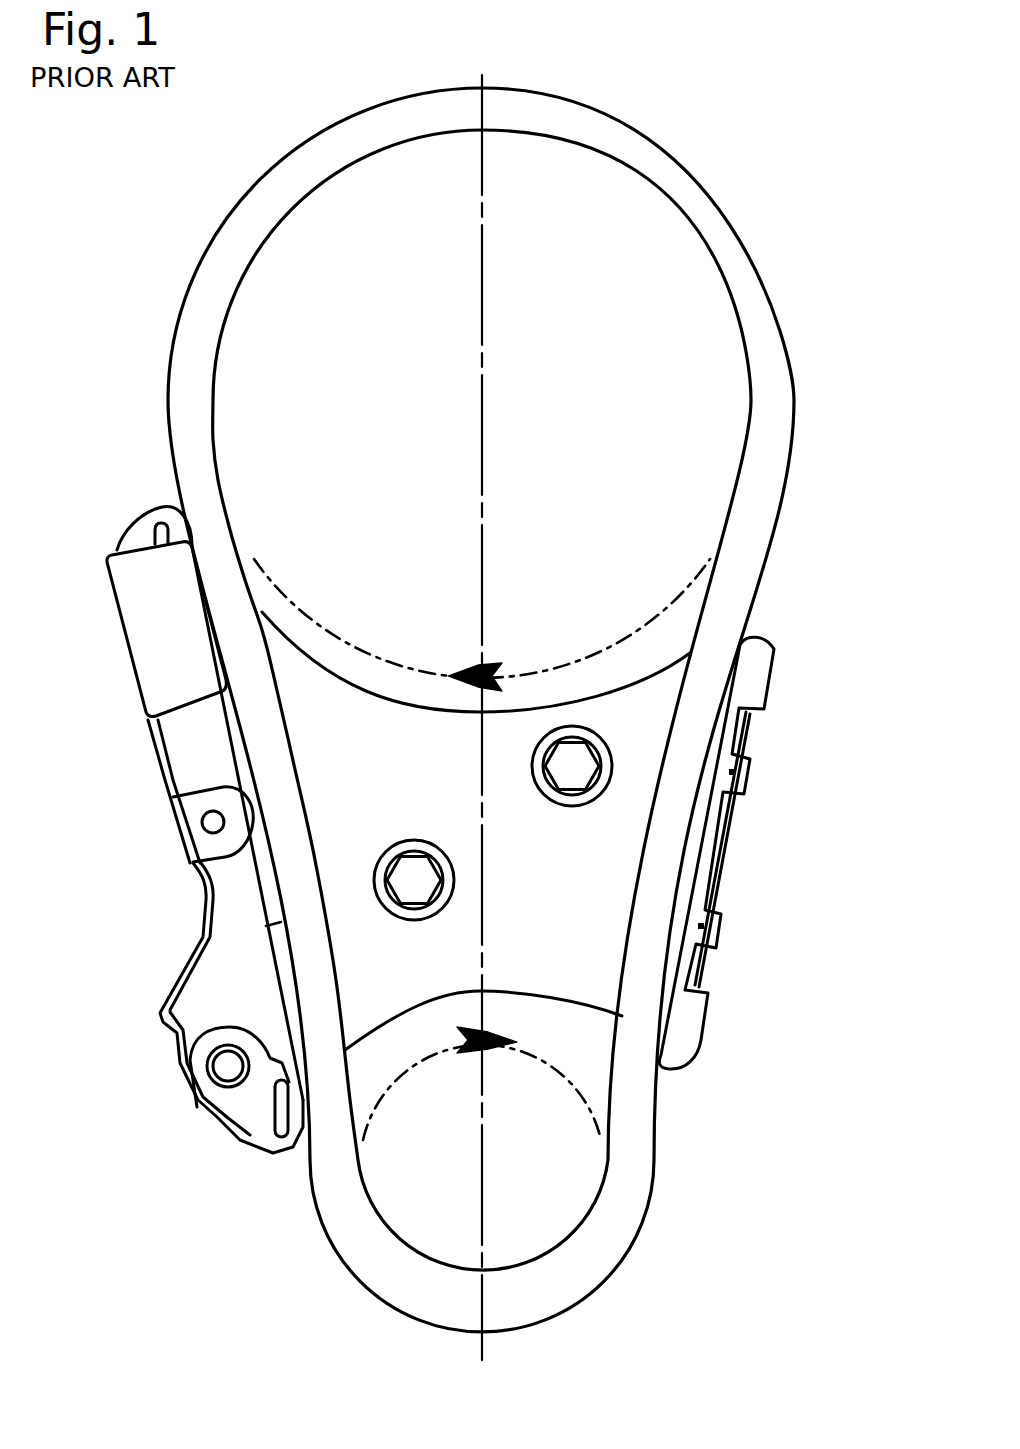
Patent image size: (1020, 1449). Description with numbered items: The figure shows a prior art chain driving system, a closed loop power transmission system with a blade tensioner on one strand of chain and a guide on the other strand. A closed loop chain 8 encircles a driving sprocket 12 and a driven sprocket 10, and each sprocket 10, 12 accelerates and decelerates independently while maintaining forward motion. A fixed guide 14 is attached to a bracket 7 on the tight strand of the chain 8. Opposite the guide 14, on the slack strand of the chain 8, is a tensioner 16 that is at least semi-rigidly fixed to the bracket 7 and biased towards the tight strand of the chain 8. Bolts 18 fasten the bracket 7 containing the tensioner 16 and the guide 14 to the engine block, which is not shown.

The bracket 7 is at (590, 878).
The closed loop chain 8 is at (567, 128).
The driven sprocket 10 is at (625, 263).
The driving sprocket 12 is at (565, 1222).
The fixed guide 14 is at (751, 672).
The tensioner 16 is at (228, 975).
The bolts 18 is at (559, 805).